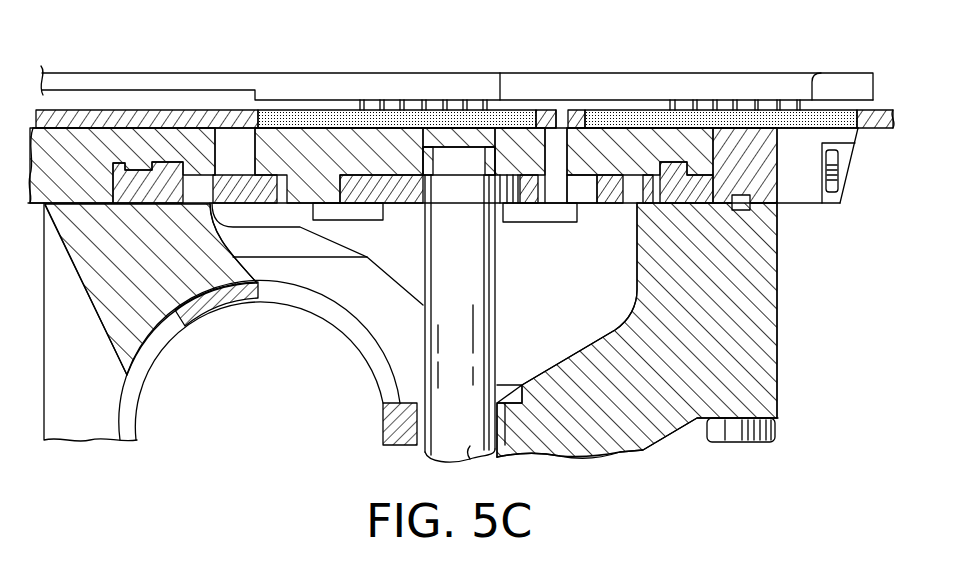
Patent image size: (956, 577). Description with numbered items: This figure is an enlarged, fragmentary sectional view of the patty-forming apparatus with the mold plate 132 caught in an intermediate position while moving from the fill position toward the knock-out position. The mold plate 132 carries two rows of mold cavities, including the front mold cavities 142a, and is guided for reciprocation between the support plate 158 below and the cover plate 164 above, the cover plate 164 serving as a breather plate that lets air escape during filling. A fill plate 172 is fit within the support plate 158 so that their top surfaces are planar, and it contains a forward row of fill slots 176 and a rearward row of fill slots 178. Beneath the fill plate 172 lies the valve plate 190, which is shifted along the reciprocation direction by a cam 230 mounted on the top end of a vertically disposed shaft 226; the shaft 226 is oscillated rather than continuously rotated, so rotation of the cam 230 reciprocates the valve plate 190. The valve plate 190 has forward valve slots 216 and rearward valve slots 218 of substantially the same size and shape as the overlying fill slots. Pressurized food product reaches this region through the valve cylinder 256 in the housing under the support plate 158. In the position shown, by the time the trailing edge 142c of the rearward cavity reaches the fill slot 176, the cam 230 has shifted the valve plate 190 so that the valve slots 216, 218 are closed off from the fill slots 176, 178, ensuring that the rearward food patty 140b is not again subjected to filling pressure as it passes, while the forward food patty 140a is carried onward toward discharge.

The cover plate 164 is at (133, 100).
The mold plate 132 is at (213, 107).
The fill slots 178 is at (240, 137).
The food patty 140b is at (323, 110).
The fill plate 172 is at (390, 128).
The trailing edge 142c is at (542, 123).
The fill slots 176 is at (558, 137).
The front mold cavities 142a is at (590, 125).
The food patty 140a is at (658, 107).
The support plate 158 is at (767, 193).
The forward valve slots 216 is at (597, 180).
The cam 230 is at (473, 202).
The valve plate 190 is at (395, 195).
The rearward valve slots 218 is at (272, 203).
The shaft 226 is at (497, 314).
The valve cylinder 256 is at (170, 332).